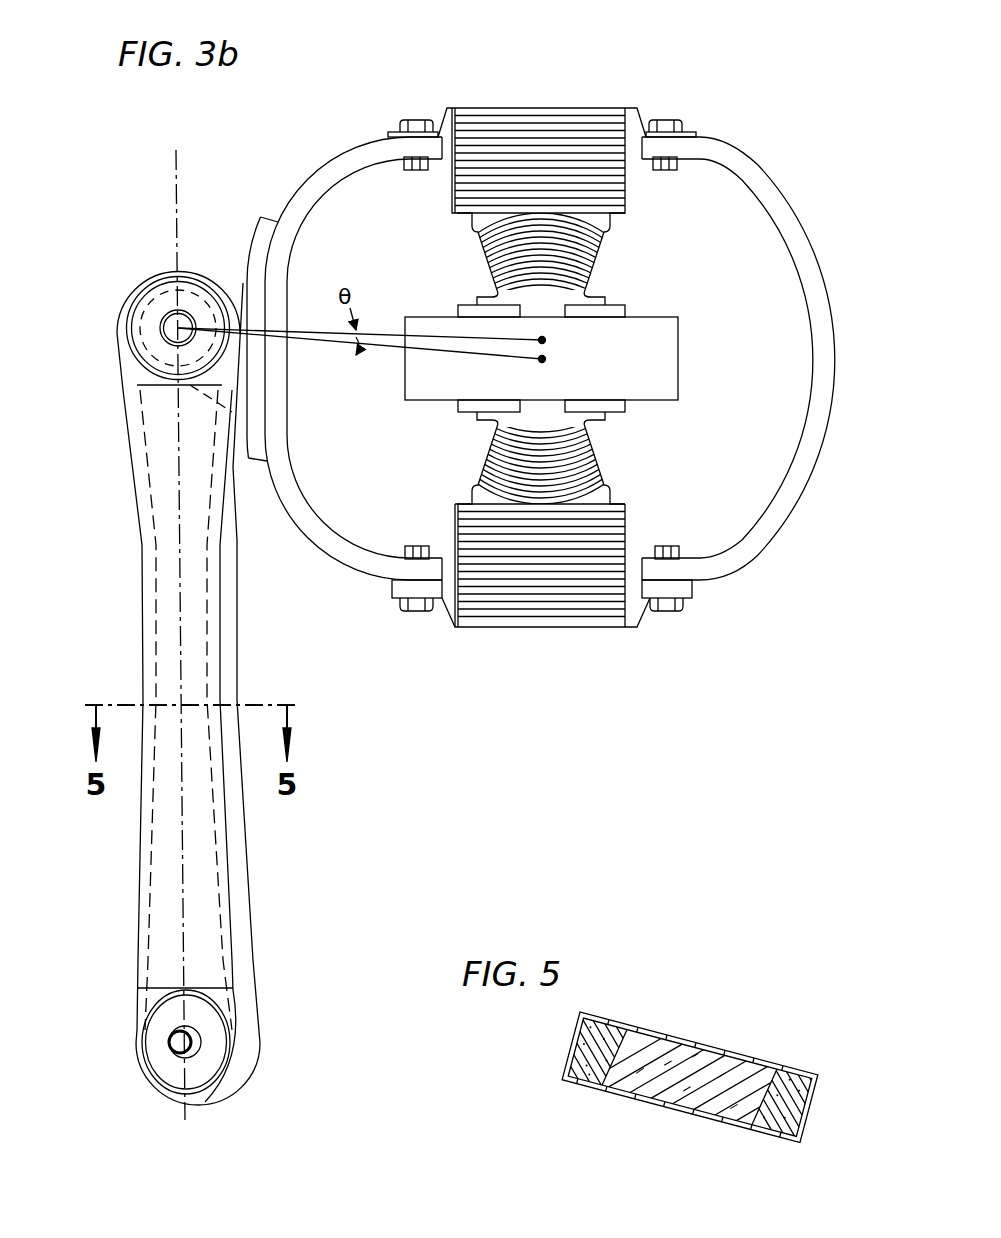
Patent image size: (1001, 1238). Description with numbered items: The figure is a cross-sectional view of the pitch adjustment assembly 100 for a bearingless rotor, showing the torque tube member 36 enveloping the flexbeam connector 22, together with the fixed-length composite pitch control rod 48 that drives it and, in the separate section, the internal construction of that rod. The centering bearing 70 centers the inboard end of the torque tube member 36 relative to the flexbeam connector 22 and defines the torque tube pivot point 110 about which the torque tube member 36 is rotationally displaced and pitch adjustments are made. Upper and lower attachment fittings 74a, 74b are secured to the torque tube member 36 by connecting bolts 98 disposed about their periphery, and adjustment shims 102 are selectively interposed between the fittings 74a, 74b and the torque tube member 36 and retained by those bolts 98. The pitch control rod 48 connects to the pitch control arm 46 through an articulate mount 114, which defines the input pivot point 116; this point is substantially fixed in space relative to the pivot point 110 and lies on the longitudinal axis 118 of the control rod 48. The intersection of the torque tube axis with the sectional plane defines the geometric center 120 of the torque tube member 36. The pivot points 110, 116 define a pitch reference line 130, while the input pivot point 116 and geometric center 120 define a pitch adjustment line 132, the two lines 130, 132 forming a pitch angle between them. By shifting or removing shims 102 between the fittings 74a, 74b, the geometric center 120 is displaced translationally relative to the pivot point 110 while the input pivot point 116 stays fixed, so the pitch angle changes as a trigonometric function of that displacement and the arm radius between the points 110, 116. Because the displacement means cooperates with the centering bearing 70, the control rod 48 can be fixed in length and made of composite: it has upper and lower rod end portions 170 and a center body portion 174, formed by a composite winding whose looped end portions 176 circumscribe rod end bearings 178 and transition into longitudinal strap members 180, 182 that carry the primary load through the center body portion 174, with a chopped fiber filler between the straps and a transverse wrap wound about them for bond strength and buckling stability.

The pitch adjustment assembly 100 is at (775, 112).
The torque tube member 36 is at (765, 188).
The pitch control arm 46 is at (243, 272).
The pitch control rod 48 is at (238, 540).
The centering bearing 70 is at (695, 440).
The upper attachment fitting 74a is at (512, 106).
The lower attachment fitting 74b is at (497, 628).
The connecting bolts 98 is at (412, 118).
The adjustment shims 102 is at (395, 590).
The flexbeam connector 22 is at (650, 393).
The torque tube pivot point 110 is at (547, 359).
The geometric center 120 is at (547, 340).
The pitch reference line 130 is at (448, 352).
The pitch adjustment line 132 is at (425, 335).
The articulate mount 114 is at (158, 316).
The input pivot point 116 is at (170, 345).
The longitudinal axis 118 is at (196, 200).
The rod end portions 170 is at (100, 312).
The center body portion 174 is at (283, 824).
The looped end portions 176 is at (163, 278).
The rod end bearings 178 is at (136, 334).
The longitudinal strap member 180 is at (141, 893).
The longitudinal strap member 182 is at (228, 878).